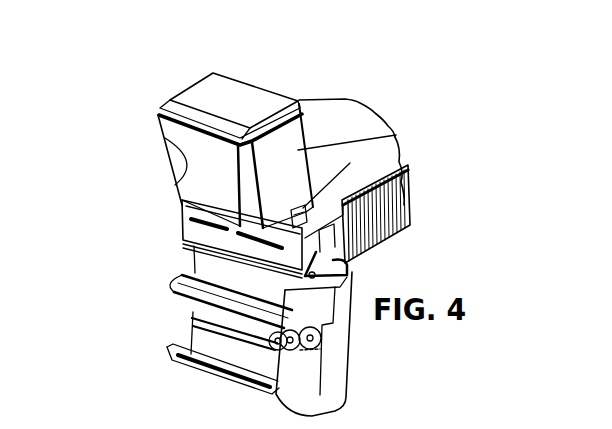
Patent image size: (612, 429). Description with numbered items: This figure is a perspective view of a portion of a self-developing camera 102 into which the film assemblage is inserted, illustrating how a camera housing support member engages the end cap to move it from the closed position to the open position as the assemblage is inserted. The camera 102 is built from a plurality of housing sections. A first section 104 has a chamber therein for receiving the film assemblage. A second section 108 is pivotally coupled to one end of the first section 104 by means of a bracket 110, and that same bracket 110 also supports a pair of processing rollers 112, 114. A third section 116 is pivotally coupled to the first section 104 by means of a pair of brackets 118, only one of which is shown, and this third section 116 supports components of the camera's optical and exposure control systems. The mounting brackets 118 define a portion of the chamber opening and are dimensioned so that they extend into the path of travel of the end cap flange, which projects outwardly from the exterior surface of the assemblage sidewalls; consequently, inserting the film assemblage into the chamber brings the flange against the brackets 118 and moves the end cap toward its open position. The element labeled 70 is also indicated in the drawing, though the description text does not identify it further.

The self-developing camera 102 is at (432, 185).
The third section 116 is at (241, 95).
The brackets 118 is at (288, 210).
The first section 104 is at (399, 236).
The tray 70 is at (173, 233).
The processing roller 114 is at (236, 296).
The processing roller 112 is at (232, 326).
The bracket 110 is at (347, 263).
The second section 108 is at (336, 381).